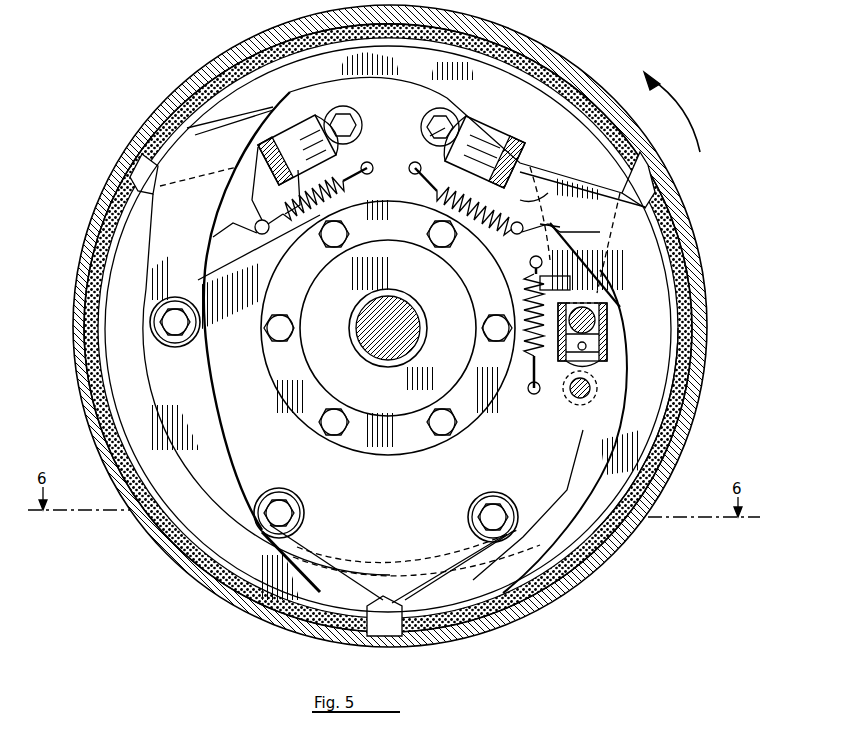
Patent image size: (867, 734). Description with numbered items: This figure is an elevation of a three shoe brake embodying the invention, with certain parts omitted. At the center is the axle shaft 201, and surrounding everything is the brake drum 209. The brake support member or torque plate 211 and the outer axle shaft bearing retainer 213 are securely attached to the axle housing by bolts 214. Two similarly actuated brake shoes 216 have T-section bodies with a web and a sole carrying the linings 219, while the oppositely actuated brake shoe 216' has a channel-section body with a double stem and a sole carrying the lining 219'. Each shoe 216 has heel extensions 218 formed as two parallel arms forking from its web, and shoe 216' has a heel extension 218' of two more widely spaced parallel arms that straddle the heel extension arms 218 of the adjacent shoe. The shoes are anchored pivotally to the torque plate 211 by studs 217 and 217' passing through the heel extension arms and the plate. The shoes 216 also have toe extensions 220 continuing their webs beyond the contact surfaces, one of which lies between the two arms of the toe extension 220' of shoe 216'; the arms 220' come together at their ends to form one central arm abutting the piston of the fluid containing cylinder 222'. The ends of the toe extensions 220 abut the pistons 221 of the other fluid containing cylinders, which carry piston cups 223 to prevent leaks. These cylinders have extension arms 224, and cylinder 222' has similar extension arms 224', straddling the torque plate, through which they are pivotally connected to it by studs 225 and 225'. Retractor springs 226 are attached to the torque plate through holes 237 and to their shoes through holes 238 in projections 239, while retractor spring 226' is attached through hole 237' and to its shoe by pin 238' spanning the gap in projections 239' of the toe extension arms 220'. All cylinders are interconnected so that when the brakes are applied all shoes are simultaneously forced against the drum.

The axle shaft 201 is at (398, 310).
The brake drum 209 is at (690, 238).
The torque plate 211 is at (370, 327).
The outer axle shaft bearing retainer 213 is at (376, 350).
The bolt 214 is at (330, 430).
The brake shoe 216 is at (388, 329).
The oppositely actuated brake shoe 216' is at (571, 431).
The stud 217 is at (343, 419).
The stud 217' is at (302, 510).
The heel extension 218 is at (314, 346).
The heel extension 218' is at (450, 516).
The lining 219 is at (388, 328).
The lining 219' is at (669, 430).
The toe extension 220 is at (546, 194).
The toe extension 220' is at (426, 227).
The piston 221 is at (606, 322).
The fluid containing cylinder 222' is at (496, 138).
The piston cup 223 is at (607, 334).
The extension arm 224 is at (500, 260).
The extension arm 224' is at (420, 145).
The stud 225 is at (460, 260).
The stud 225' is at (452, 120).
The retractor spring 226 is at (406, 266).
The retractor spring 226' is at (474, 223).
The hole 237 is at (441, 289).
The hole 237' is at (416, 178).
The hole 238 is at (379, 272).
The pin 238' is at (580, 233).
The projection 239 is at (391, 256).
The projection 239' is at (537, 191).